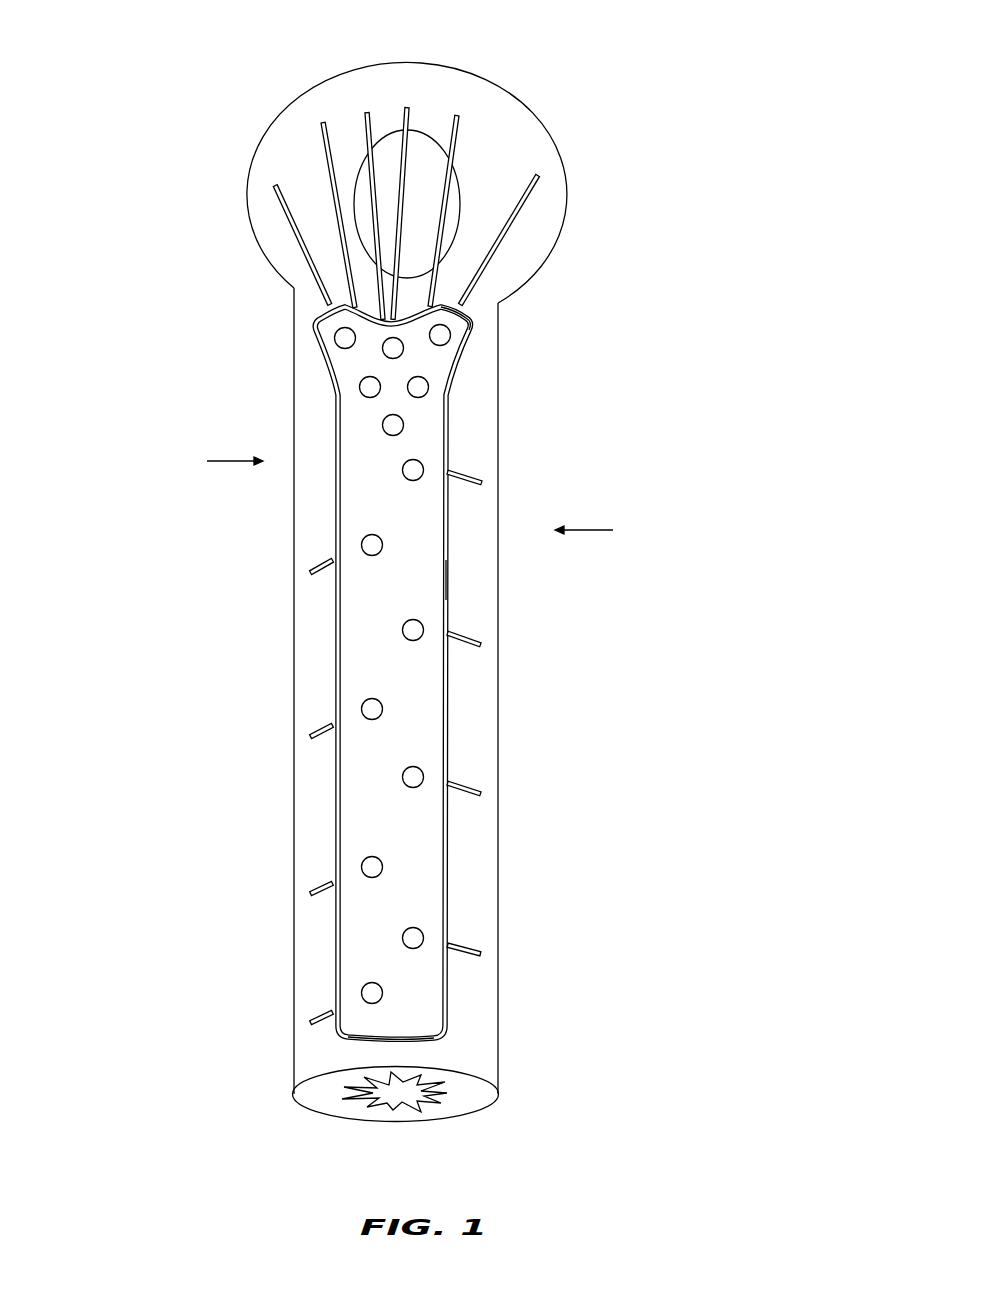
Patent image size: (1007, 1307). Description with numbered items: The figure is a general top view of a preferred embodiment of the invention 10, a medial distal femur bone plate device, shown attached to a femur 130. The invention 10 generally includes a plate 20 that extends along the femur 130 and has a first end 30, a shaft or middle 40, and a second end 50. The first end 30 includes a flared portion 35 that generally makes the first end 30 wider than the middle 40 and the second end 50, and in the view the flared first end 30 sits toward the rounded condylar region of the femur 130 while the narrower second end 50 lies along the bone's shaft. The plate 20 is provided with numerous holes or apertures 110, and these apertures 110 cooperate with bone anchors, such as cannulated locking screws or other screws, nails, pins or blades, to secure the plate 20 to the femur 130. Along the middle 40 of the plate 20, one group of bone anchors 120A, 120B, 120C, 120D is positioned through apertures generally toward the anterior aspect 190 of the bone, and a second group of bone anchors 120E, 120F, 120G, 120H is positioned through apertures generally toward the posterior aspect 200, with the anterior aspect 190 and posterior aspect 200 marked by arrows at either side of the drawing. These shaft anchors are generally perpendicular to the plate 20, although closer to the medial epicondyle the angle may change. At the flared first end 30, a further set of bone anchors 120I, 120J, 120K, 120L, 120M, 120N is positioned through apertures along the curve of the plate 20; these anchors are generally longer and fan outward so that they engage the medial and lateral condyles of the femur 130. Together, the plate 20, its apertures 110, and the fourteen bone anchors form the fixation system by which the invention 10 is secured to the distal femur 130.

The invention 10 is at (642, 313).
The plate 20 is at (387, 504).
The first end 30 is at (452, 300).
The flared portion 35 is at (474, 314).
The shaft or middle 40 is at (447, 578).
The second end 50 is at (430, 1046).
The aperture 110 is at (448, 335).
The bone anchor 120A is at (331, 561).
The bone anchor 120B is at (331, 726).
The bone anchor 120C is at (331, 884).
The bone anchor 120D is at (331, 1013).
The bone anchor 120E is at (465, 474).
The bone anchor 120F is at (465, 636).
The bone anchor 120G is at (465, 786).
The bone anchor 120H is at (465, 947).
The bone anchor 120I is at (372, 126).
The bone anchor 120J is at (324, 133).
The bone anchor 120K is at (293, 234).
The bone anchor 120L is at (456, 133).
The bone anchor 120M is at (527, 203).
The bone anchor 120N is at (409, 123).
The femur 130 is at (310, 1104).
The anterior aspect or side 190 is at (190, 476).
The posterior aspect or side 200 is at (632, 546).